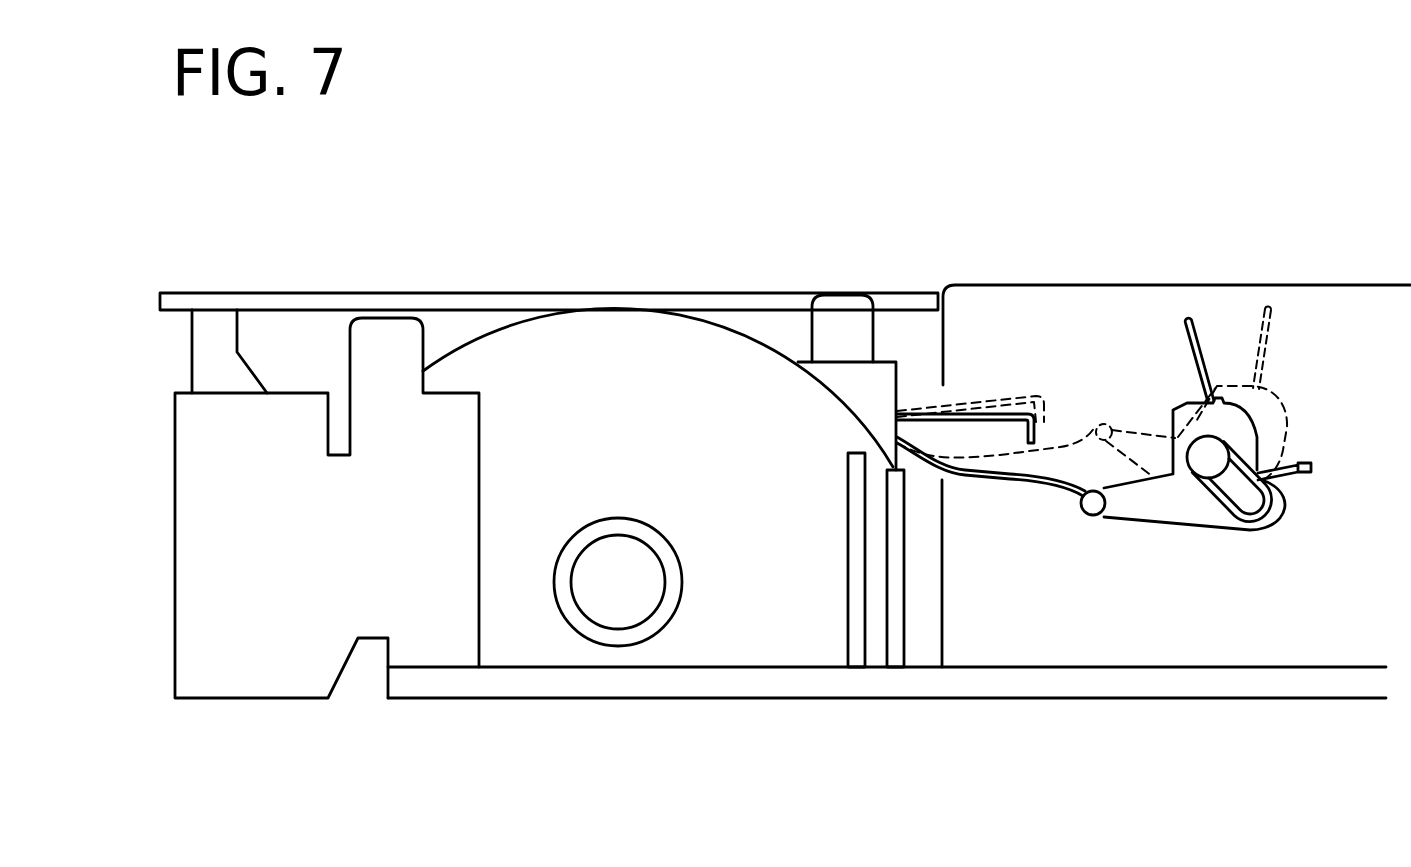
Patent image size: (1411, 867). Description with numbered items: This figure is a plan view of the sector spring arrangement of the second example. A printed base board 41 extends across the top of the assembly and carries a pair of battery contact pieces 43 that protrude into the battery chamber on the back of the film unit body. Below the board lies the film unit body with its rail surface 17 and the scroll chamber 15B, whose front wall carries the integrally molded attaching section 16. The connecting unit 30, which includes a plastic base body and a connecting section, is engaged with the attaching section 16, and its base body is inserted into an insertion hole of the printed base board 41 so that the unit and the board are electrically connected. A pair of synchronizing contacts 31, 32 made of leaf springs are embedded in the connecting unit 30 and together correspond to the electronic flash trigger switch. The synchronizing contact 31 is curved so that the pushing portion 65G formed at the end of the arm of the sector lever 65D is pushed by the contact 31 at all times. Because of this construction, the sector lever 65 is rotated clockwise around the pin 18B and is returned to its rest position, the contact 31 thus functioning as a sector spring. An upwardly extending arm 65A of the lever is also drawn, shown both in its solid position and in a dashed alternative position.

The printed base board 41 is at (307, 293).
The battery contact pieces 43 is at (198, 360).
The rail surface 17 is at (252, 678).
The scroll chamber 15B is at (708, 652).
The connecting unit 30 is at (842, 293).
The attaching section 16 is at (898, 380).
The synchronizing contact 32 is at (1043, 408).
The synchronizing contact 31 is at (1031, 478).
The pushing portion 65G is at (1095, 515).
The sector lever 65 is at (1245, 412).
The arm of the sector lever 65D is at (1212, 519).
The lever arm 65A is at (1196, 333).
The pin 18B is at (1217, 436).